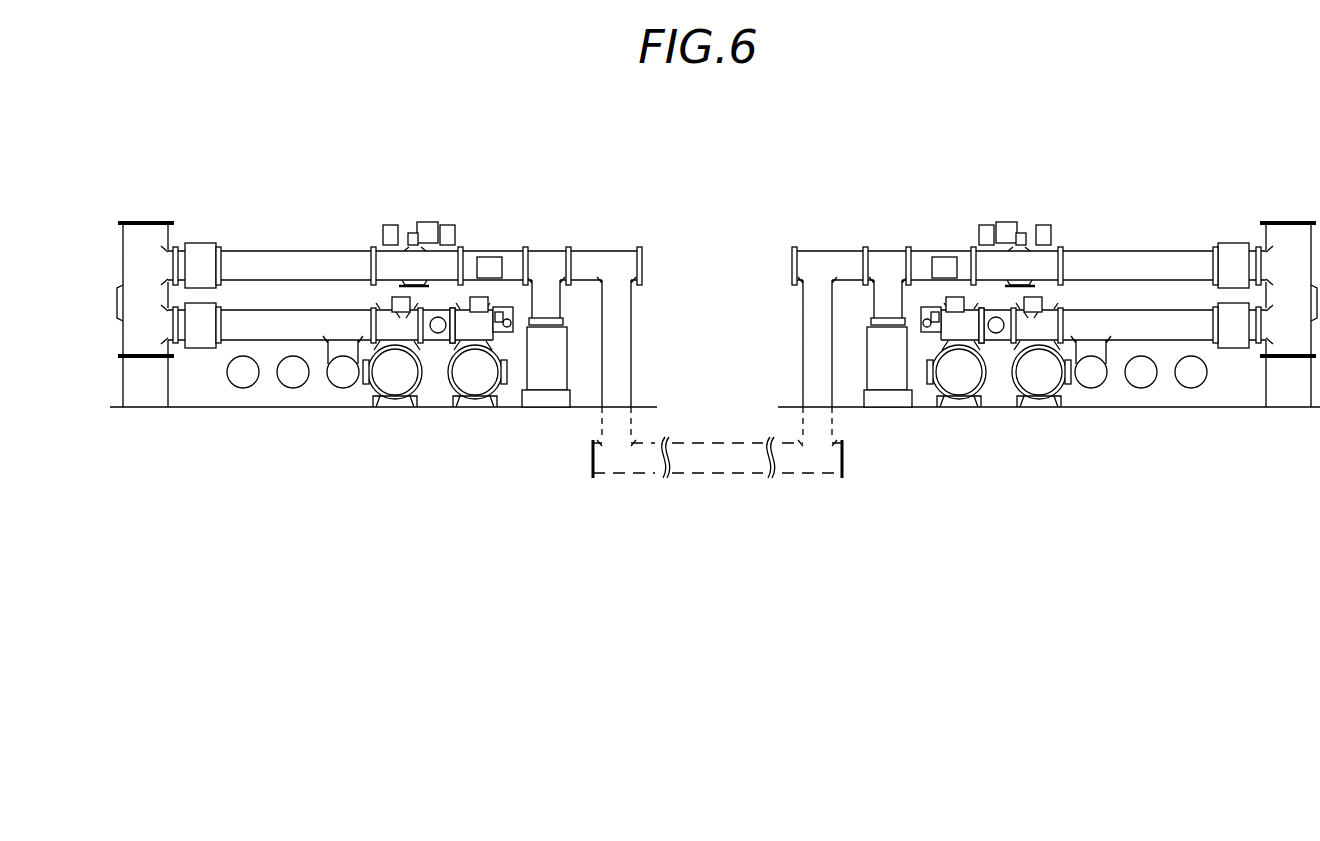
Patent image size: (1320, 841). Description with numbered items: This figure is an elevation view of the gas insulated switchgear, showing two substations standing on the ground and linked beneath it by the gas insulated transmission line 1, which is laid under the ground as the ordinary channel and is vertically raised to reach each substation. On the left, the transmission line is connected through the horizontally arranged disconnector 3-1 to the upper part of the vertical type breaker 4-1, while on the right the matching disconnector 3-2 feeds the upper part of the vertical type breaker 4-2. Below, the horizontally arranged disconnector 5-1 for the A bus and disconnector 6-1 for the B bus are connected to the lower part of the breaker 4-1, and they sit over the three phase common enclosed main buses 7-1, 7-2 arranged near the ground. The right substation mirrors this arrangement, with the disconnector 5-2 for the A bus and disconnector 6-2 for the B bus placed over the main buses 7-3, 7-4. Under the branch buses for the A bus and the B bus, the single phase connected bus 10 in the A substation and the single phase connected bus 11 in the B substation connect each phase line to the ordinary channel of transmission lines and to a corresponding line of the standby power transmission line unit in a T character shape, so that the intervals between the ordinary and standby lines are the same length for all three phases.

The gas insulated transmission line 1 is at (722, 470).
The disconnector at the transmission line side 3-1 is at (412, 252).
The disconnector at the transmission line side 3-2 is at (1018, 258).
The vertical type breaker 4-1 is at (146, 243).
The vertical type breaker 4-2 is at (1292, 243).
The disconnector for the A bus 5-1 is at (402, 331).
The disconnector for the A bus 5-2 is at (956, 336).
The disconnector for the B bus 6-1 is at (482, 333).
The disconnector for the B bus 6-2 is at (1040, 336).
The three phase common enclosed main bus 7-1 is at (403, 390).
The three phase common enclosed main bus 7-2 is at (472, 390).
The three phase common enclosed main bus 7-3 is at (963, 390).
The three phase common enclosed main bus 7-4 is at (1033, 390).
The single phase connected bus 10 is at (340, 378).
The single phase connected bus 11 is at (1193, 380).